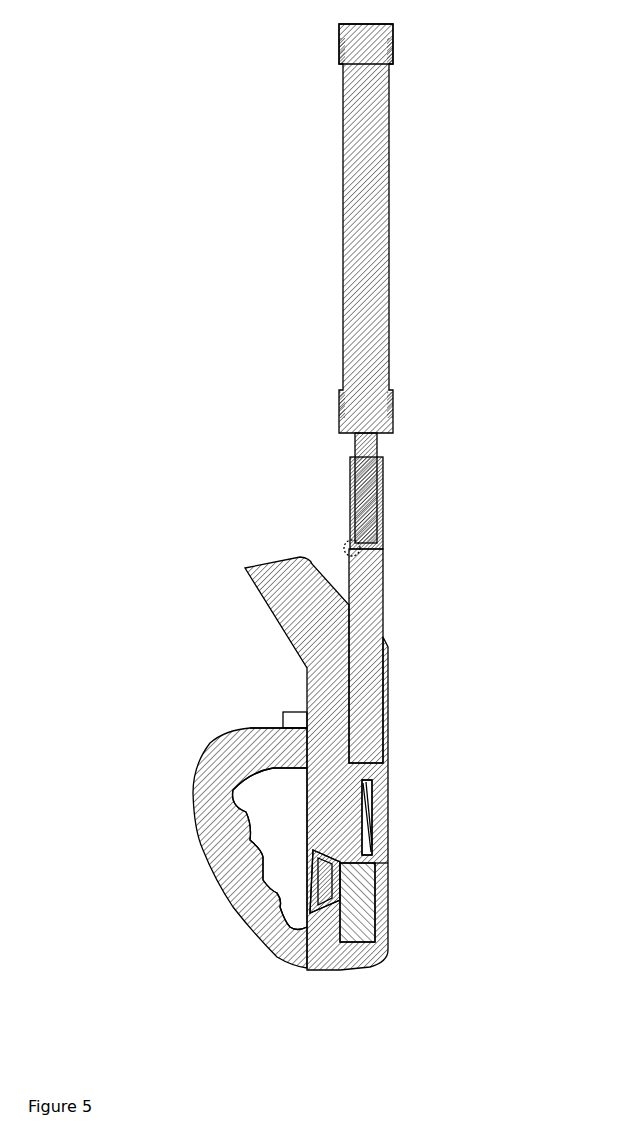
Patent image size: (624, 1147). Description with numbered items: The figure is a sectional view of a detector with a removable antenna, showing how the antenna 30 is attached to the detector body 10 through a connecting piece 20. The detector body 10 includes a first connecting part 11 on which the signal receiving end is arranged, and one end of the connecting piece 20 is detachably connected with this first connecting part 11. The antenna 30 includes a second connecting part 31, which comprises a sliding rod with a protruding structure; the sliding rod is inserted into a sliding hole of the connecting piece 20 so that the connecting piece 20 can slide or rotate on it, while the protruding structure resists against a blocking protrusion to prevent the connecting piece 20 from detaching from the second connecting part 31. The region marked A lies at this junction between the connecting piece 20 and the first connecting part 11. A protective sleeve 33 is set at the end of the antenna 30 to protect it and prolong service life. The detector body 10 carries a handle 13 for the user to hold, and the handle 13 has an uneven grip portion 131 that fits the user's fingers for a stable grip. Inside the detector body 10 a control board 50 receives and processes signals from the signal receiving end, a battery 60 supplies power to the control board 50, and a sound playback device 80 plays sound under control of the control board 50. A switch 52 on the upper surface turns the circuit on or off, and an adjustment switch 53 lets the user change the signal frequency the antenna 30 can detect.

The detector body 10 is at (410, 718).
The first connecting part 11 is at (373, 622).
The handle 13 is at (218, 838).
The uneven grip portion 131 is at (278, 897).
The connecting piece 20 is at (343, 485).
The antenna 30 is at (407, 228).
The second connecting part 31 is at (380, 448).
The protective sleeve 33 is at (405, 38).
The control board 50 is at (372, 803).
The switch 52 is at (287, 710).
The adjustment switch 53 is at (290, 783).
The battery 60 is at (365, 918).
The sound playback device 80 is at (328, 878).
The region A is at (343, 545).